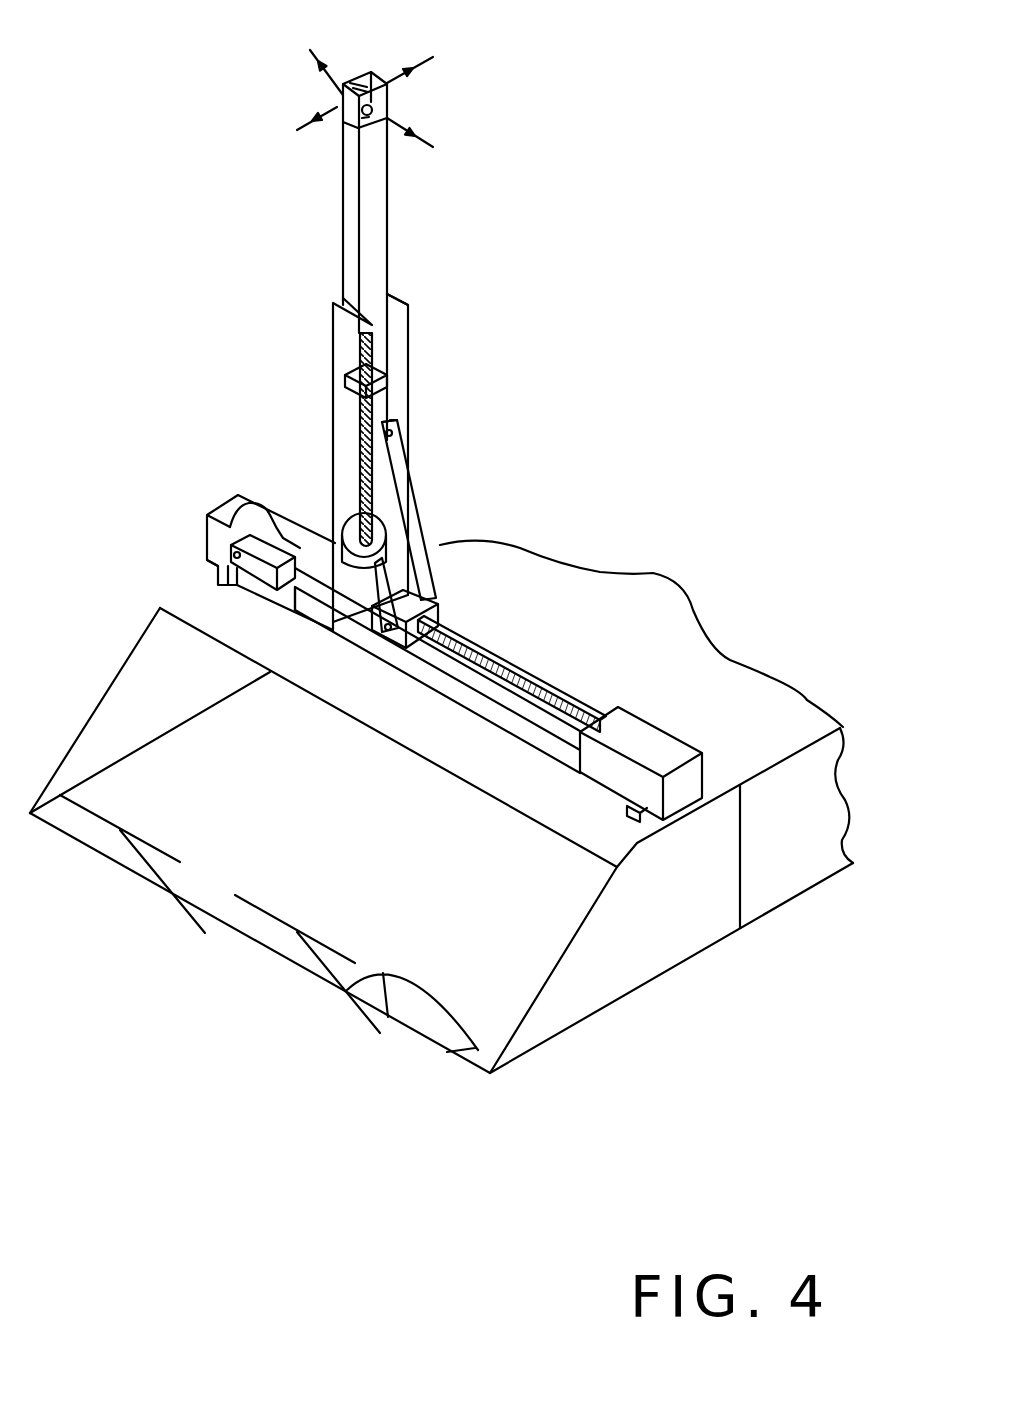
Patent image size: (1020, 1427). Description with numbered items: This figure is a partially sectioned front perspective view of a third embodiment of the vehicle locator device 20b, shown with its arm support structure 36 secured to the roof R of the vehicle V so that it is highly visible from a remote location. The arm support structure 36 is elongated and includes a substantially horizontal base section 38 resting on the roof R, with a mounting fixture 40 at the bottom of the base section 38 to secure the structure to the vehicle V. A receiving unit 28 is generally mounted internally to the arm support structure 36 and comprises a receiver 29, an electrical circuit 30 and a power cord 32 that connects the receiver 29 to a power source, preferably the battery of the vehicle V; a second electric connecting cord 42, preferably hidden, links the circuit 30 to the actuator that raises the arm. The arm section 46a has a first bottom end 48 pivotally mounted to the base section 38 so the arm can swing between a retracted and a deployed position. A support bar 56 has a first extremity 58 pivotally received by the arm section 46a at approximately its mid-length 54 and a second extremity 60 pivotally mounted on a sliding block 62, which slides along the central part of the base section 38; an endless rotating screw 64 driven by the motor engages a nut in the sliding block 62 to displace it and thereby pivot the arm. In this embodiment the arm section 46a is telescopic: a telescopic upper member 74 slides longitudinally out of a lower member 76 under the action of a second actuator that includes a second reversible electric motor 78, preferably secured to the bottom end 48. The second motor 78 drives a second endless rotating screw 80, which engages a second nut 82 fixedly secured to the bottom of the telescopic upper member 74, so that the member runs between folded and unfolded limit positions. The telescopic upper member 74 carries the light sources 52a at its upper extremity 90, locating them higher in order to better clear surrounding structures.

The vehicle locator device 20b is at (138, 277).
The receiving unit 28 is at (253, 500).
The receiver 29 is at (217, 566).
The electrical circuit 30 is at (275, 566).
The power cord 32 is at (238, 507).
The arm support structure 36 is at (527, 740).
The base section 38 is at (630, 723).
The mounting fixture 40 is at (633, 808).
The second electric connecting cord 42 is at (305, 490).
The arm section 46a is at (333, 343).
The first bottom end 48 is at (370, 588).
The light sources 52a is at (373, 107).
The mid-length 54 is at (410, 413).
The support bar 56 is at (407, 590).
The first extremity 58 is at (397, 427).
The second extremity 60 is at (390, 628).
The sliding block 62 is at (440, 606).
The endless rotating screw 64 is at (520, 695).
The telescopic upper member 74 is at (388, 170).
The lower member 76 is at (333, 315).
The second reversible electric motor 78 is at (413, 517).
The second endless rotating screw 80 is at (380, 403).
The second nut 82 is at (380, 377).
The upper extremity 90 is at (343, 100).
The roof R is at (653, 573).
The vehicle V is at (713, 945).